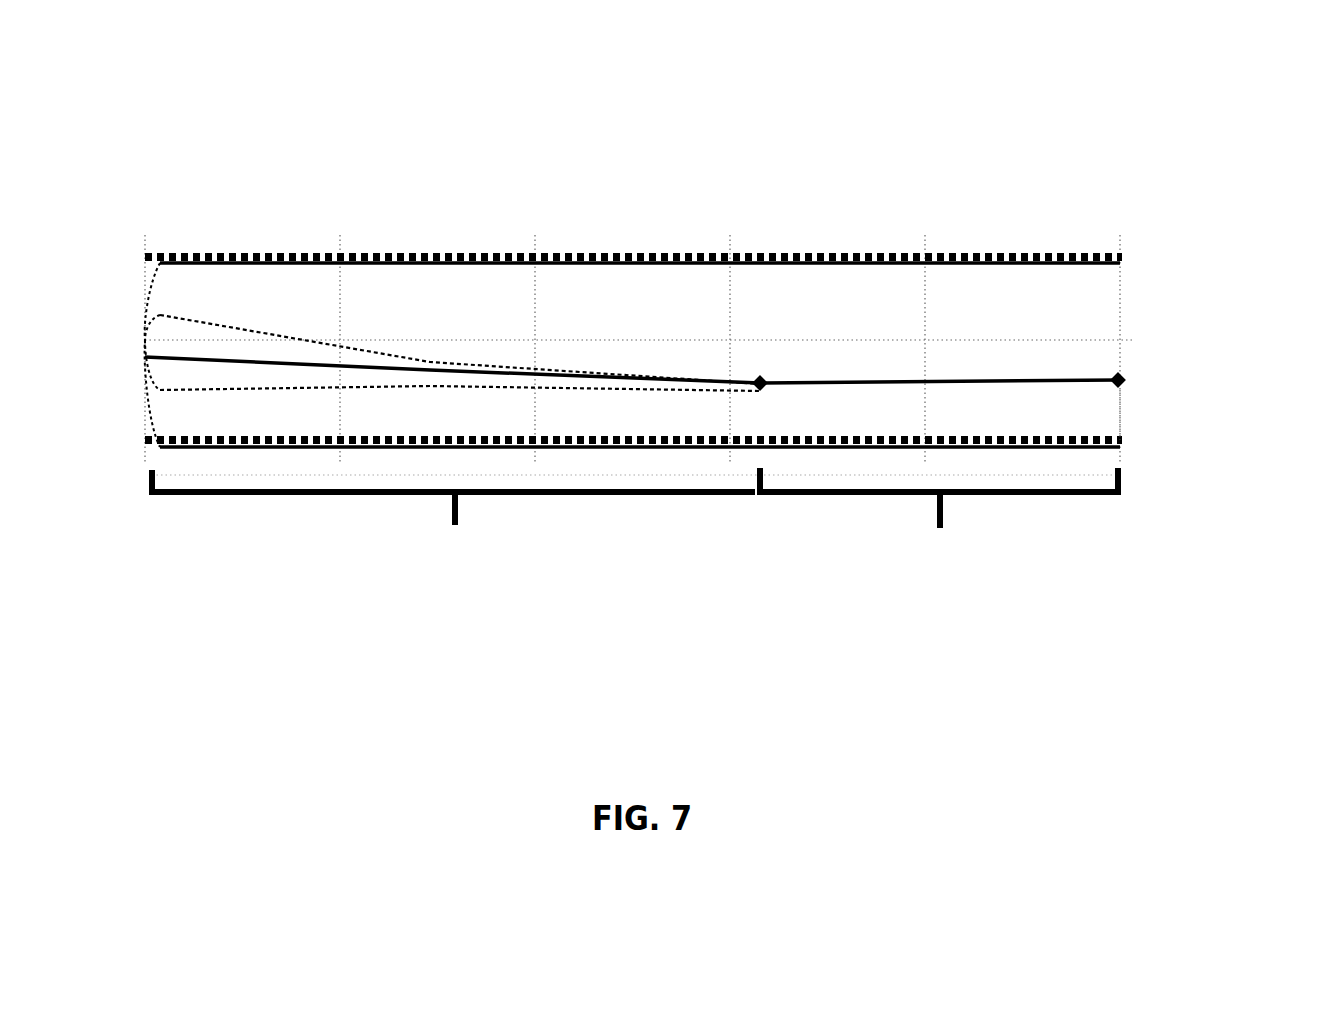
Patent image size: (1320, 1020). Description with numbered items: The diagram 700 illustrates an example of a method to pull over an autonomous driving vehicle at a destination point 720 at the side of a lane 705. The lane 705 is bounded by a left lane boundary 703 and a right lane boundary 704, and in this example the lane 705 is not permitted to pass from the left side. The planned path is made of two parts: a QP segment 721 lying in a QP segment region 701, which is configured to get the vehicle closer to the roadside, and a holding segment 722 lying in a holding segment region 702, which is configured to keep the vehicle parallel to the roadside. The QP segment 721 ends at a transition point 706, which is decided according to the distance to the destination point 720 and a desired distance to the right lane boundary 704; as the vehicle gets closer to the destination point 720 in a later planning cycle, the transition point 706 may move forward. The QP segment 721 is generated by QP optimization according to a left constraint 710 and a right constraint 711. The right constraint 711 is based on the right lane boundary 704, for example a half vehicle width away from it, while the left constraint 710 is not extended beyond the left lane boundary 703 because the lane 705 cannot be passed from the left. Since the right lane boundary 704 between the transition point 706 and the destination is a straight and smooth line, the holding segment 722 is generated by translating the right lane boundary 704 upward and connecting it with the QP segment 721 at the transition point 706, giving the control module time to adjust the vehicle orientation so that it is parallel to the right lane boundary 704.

The pull-over path planning diagram 700 is at (640, 256).
The QP segment region 701 is at (532, 500).
The holding segment region 702 is at (1062, 510).
The left lane boundary 703 is at (190, 255).
The right lane boundary 704 is at (176, 442).
The lane 705 is at (1130, 412).
The transition point 706 is at (762, 380).
The left constraint 710 is at (222, 320).
The right constraint 711 is at (220, 390).
The destination point 720 is at (1122, 381).
The QP segment 721 is at (303, 365).
The holding segment 722 is at (897, 385).